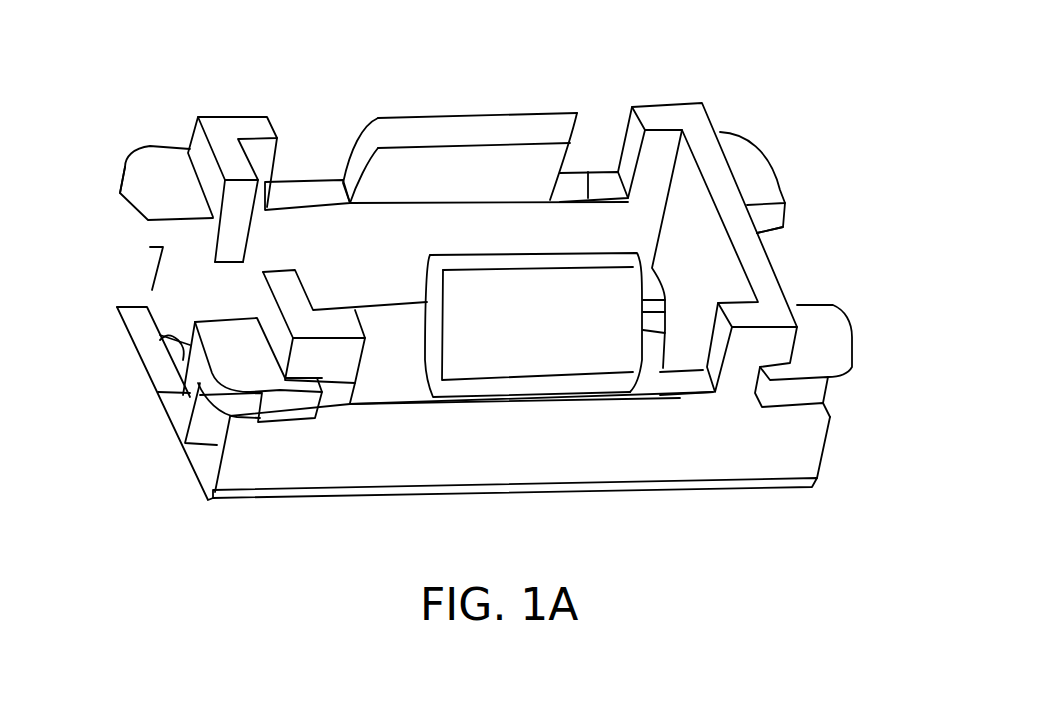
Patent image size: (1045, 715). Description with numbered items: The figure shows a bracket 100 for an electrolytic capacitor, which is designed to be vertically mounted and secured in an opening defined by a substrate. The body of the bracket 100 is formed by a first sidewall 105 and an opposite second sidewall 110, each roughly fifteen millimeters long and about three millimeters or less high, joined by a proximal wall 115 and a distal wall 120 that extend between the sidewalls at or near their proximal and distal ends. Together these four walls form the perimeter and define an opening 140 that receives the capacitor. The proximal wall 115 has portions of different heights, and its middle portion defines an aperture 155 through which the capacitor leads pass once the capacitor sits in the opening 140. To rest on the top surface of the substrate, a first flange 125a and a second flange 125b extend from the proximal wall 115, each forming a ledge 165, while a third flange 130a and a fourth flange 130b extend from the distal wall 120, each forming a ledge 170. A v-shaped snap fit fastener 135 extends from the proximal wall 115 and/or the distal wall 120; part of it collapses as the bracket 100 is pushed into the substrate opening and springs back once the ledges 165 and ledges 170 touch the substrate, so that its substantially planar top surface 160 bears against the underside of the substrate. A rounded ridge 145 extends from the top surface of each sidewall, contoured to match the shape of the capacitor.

The bracket 100 is at (122, 98).
The first sidewall 105 is at (457, 487).
The second sidewall 110 is at (295, 177).
The proximal wall 115 is at (193, 135).
The distal wall 120 is at (710, 118).
The first flange 125a is at (125, 167).
The second flange 125b is at (295, 423).
The third flange 130a is at (767, 152).
The fourth flange 130b is at (850, 340).
The fastener 135 is at (147, 377).
The opening 140 is at (590, 172).
The ridge 145 is at (447, 115).
The aperture 155 is at (230, 280).
The top surface 160 is at (140, 330).
The ledge 165 is at (122, 203).
The ledge 170 is at (783, 230).